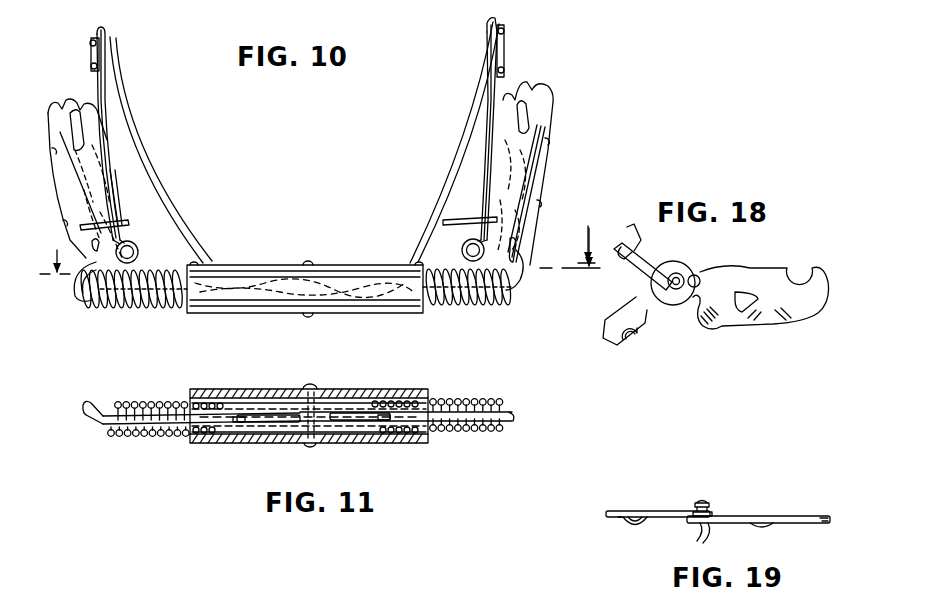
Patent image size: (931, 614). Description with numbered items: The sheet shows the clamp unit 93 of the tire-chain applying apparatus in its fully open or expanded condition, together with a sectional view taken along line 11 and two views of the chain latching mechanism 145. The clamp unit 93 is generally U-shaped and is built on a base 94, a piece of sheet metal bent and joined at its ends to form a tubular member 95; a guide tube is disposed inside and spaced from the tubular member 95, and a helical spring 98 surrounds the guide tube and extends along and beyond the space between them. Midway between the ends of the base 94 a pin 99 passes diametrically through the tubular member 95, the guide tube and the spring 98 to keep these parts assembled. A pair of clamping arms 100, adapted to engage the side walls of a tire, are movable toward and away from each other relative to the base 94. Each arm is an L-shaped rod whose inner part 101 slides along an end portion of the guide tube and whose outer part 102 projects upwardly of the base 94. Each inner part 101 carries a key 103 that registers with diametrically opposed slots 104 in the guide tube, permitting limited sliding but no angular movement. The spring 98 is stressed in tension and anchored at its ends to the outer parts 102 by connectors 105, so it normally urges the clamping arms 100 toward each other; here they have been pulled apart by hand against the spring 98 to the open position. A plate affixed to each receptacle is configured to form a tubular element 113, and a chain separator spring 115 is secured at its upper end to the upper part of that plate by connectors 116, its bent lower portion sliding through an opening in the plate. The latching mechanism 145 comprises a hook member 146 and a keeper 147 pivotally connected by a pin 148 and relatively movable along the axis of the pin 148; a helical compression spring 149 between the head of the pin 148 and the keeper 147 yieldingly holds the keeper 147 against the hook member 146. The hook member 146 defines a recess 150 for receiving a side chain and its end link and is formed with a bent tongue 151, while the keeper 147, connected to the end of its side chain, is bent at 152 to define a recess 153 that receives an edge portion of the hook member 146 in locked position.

In FIG. 10, the section line 11— 11 is at (321, 242).
In FIG. 18, the section line 11— 11 is at (591, 235).
In FIG. 10, the clamp unit 93 is at (512, 69).
In FIG. 11, the base 94 is at (211, 449).
In FIG. 11, the tubular member 95 is at (236, 392).
In FIG. 10, the helical spring 98 is at (122, 310).
In FIG. 11, the helical spring 98 is at (128, 405).
In FIG. 10, the pin 99 is at (308, 263).
In FIG. 11, the pin 99 is at (315, 390).
In FIG. 10, the clamping arm 100 is at (118, 70).
In FIG. 10, the rod inner part 101 is at (166, 306).
In FIG. 11, the rod inner part 101 is at (158, 424).
In FIG. 10, the rod outer part 102 is at (544, 174).
In FIG. 11, the key 103 is at (243, 424).
In FIG. 11, the slot 104 is at (283, 420).
In FIG. 10, the connector 105 is at (96, 245).
In FIG. 10, the tubular element 113 is at (125, 253).
In FIG. 10, the chain separator spring 115 is at (139, 193).
In FIG. 10, the connector 116 is at (94, 67).
In FIG. 18, the latching mechanism 145 is at (718, 268).
In FIG. 19, the latching mechanism 145 is at (733, 508).
In FIG. 18, the hook member 146 is at (763, 327).
In FIG. 19, the hook member 146 is at (773, 527).
In FIG. 18, the keeper 147 is at (643, 306).
In FIG. 19, the keeper 147 is at (655, 509).
In FIG. 18, the pin 148 is at (697, 273).
In FIG. 19, the pin 148 is at (698, 500).
In FIG. 19, the helical compression spring 149 is at (712, 506).
In FIG. 18, the recess 150 is at (798, 280).
In FIG. 18, the bent tongue 151 is at (712, 328).
In FIG. 19, the bent tongue 151 is at (708, 536).
In FIG. 18, the bend 152 is at (630, 338).
In FIG. 19, the bend 152 is at (638, 528).
In FIG. 19, the recess 153 is at (622, 521).